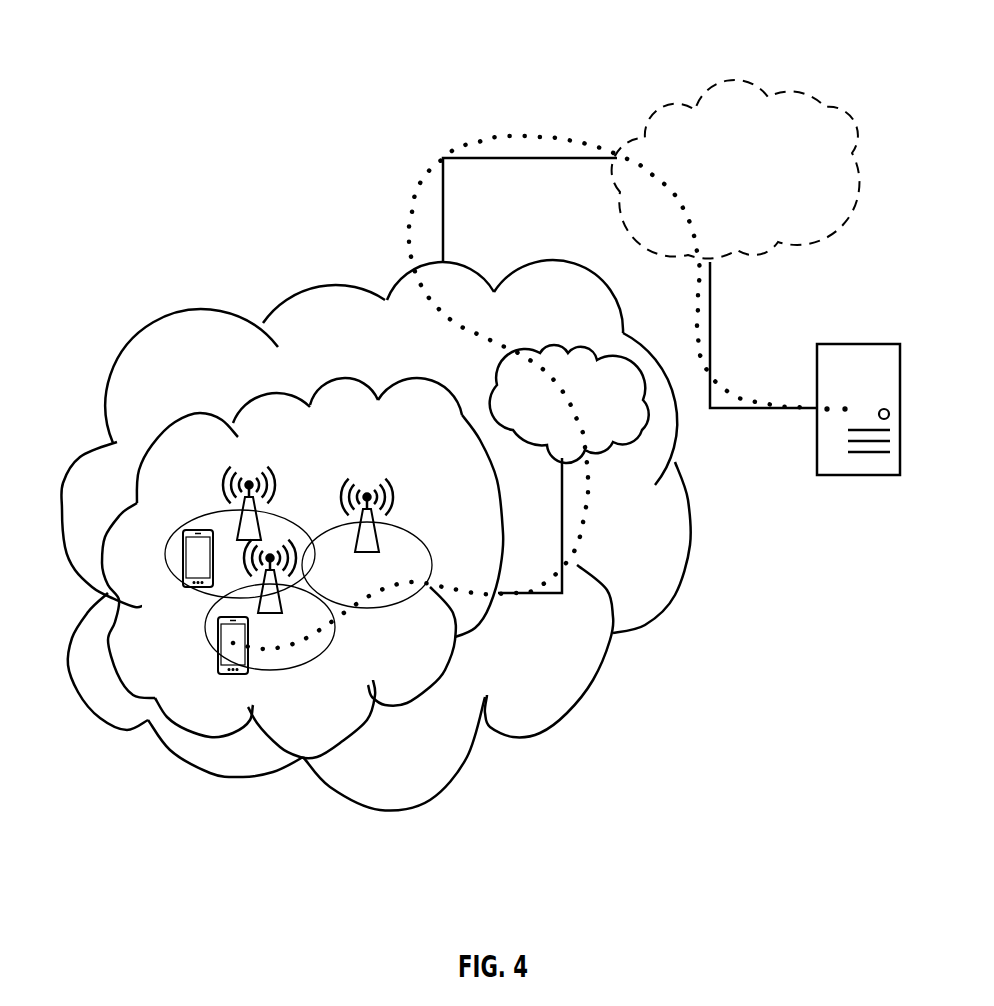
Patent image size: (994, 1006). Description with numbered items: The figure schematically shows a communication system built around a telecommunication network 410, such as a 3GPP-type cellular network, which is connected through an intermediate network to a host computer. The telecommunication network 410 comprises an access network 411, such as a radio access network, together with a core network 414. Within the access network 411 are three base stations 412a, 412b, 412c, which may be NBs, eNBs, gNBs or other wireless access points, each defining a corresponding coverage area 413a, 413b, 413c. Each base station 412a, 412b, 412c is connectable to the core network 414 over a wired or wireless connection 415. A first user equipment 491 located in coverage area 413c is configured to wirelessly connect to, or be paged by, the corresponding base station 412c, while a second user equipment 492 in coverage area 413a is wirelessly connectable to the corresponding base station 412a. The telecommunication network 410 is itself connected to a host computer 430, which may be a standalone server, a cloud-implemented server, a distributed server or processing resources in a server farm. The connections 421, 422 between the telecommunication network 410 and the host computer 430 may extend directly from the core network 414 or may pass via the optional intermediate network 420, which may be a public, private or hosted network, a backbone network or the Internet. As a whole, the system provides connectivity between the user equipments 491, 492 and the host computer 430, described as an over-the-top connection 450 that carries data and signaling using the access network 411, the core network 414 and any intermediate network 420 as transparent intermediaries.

The telecommunication network 410 is at (392, 331).
The access network 411 is at (348, 441).
The base station 412a is at (280, 610).
The base station 412b is at (385, 500).
The base station 412c is at (237, 490).
The coverage area 413a is at (325, 625).
The coverage area 413b is at (380, 522).
The coverage area 413c is at (207, 527).
The core network 414 is at (643, 412).
The wired or wireless connection 415 is at (563, 507).
The intermediate network 420 is at (755, 180).
The connection 421 is at (527, 158).
The connection 422 is at (770, 410).
The host computer 430 is at (858, 425).
The over-the-top (OTT) connection 450 is at (420, 180).
The first user equipment (UE) 491 is at (187, 583).
The second UE 492 is at (217, 667).